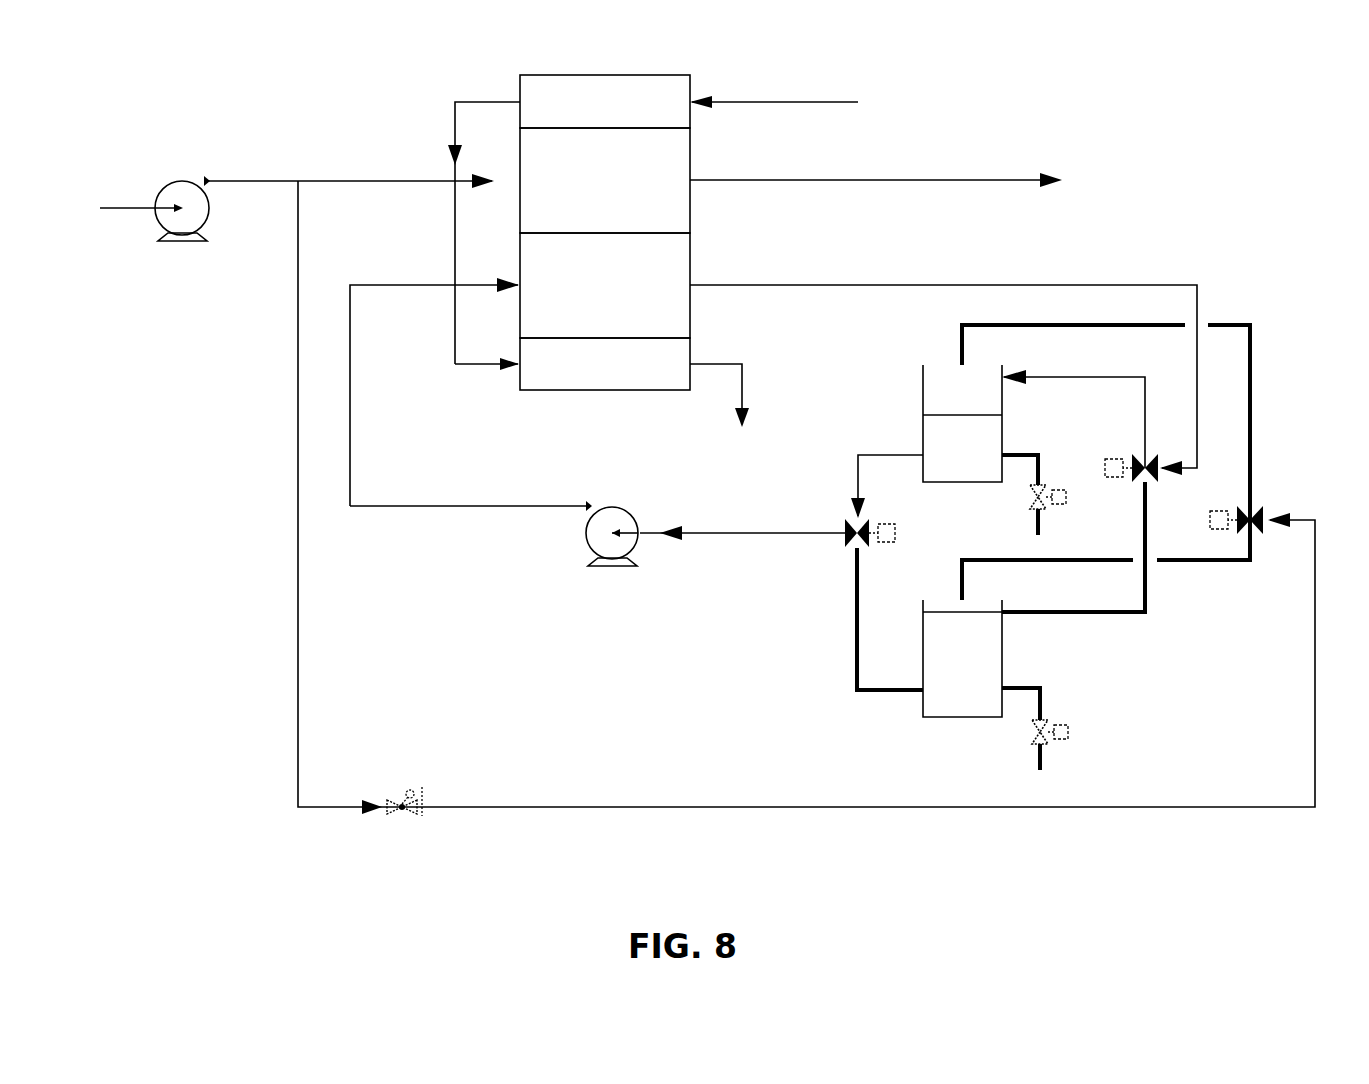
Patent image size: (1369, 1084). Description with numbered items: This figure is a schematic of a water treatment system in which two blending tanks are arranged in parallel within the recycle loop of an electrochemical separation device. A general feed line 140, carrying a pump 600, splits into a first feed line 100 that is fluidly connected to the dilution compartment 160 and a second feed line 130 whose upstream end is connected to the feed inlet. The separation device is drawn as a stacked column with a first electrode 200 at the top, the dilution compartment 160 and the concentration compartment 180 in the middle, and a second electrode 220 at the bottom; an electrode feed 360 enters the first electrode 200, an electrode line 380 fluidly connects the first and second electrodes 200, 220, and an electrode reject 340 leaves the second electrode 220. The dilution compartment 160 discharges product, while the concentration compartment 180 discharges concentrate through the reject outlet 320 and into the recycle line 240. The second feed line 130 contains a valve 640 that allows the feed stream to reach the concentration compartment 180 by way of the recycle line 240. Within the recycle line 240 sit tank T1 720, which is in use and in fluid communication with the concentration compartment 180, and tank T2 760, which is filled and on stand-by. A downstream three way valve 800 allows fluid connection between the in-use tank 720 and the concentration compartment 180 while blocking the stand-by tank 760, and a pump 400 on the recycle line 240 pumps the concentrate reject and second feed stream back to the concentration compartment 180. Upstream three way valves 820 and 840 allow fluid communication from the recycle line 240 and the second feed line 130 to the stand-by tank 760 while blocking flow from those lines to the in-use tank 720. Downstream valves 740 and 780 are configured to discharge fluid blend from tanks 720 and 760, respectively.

The first feed line 100 is at (363, 178).
The second feed line 130 is at (298, 363).
The general feed line 140 is at (111, 206).
The dilution compartment 160 is at (605, 180).
The concentration compartment 180 is at (605, 285).
The first electrode 200 is at (605, 101).
The second electrode 220 is at (605, 364).
The recycle line 240 is at (1087, 285).
The reject outlet 320 is at (909, 179).
The electrode reject 340 is at (726, 415).
The electrode feed 360 is at (805, 98).
The electrode line 380 is at (478, 100).
The pump 400 is at (617, 567).
The pump 600 is at (180, 246).
The valve 640 is at (402, 810).
The tank T1 720 is at (915, 416).
The downstream valve 740 is at (1032, 499).
The tank T2 760 is at (1072, 658).
The downstream valve 780 is at (1035, 730).
The downstream three way valve 800 is at (843, 543).
The upstream three way valve 820 is at (1135, 455).
The upstream three way valve 840 is at (1258, 507).